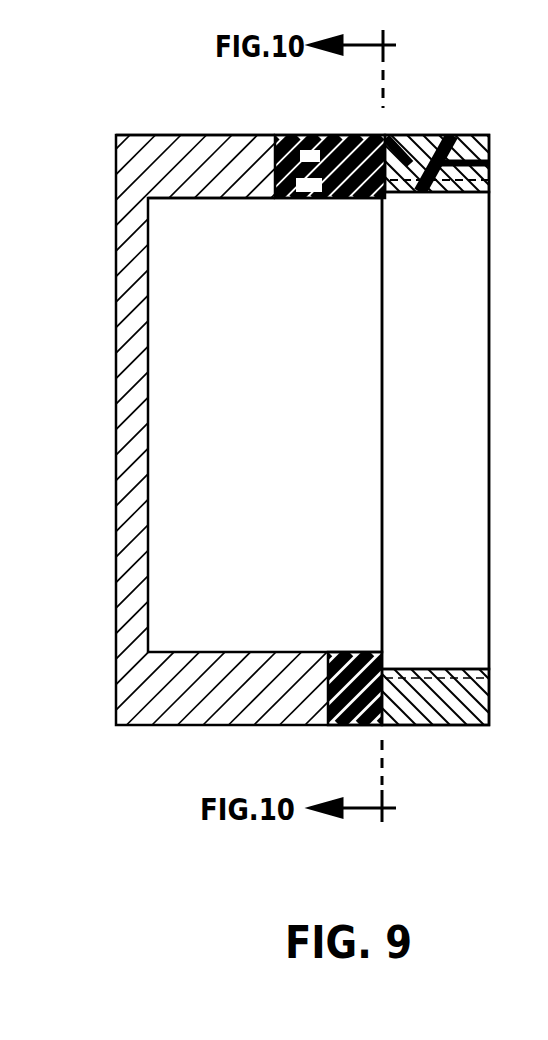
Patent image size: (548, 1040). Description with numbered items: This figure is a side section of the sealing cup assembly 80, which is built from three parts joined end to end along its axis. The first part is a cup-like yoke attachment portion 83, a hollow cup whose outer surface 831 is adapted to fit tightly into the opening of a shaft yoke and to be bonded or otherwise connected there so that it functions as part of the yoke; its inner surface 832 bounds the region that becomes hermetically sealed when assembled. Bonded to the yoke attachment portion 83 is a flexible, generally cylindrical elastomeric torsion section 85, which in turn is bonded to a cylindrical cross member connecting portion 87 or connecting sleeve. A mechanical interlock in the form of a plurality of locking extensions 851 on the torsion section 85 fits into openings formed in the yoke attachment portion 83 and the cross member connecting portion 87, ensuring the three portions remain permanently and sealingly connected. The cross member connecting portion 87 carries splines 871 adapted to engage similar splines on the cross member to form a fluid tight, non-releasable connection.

The sealing cup assembly 80 is at (95, 357).
The cup-like yoke attachment portion 83 is at (148, 677).
The outer surface 831 is at (217, 135).
The inner surface 832 is at (250, 198).
The locking extensions 851 is at (287, 148).
The elastomeric torsion section 85 is at (348, 655).
The cross member connecting portion 87 is at (428, 703).
The splines 871 is at (449, 678).